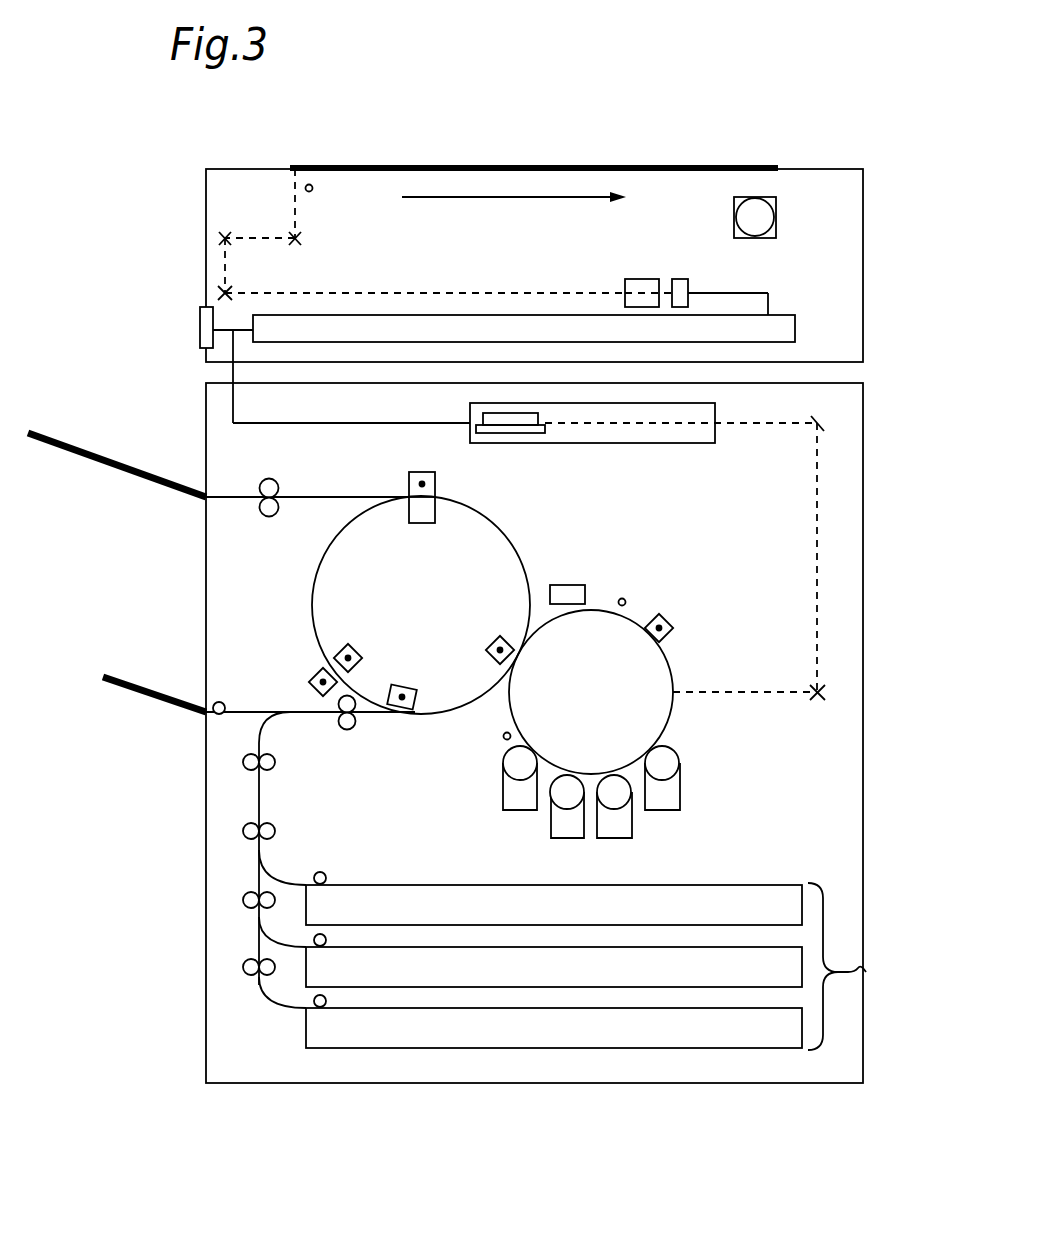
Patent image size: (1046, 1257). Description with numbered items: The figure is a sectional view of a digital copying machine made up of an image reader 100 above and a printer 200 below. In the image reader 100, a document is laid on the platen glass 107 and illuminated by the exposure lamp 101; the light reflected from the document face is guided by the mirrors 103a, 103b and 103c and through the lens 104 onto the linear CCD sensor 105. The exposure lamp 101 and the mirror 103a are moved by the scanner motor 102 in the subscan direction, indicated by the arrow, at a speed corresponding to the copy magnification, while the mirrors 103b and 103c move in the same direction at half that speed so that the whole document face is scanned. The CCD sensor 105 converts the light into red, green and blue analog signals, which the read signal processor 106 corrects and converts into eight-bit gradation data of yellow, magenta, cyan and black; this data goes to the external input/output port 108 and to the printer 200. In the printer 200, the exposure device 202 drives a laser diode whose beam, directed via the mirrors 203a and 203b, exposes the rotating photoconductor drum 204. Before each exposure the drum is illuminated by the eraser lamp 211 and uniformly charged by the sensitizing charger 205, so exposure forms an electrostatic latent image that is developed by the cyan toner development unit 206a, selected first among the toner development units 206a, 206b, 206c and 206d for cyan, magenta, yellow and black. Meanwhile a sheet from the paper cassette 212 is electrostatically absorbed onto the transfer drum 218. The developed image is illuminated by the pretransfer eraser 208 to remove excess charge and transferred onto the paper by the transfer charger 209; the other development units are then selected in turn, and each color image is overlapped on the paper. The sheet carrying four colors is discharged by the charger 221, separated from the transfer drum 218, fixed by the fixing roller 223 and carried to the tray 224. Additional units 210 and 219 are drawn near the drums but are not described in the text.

The image reader 100 is at (872, 236).
The exposure lamp 101 is at (312, 190).
The scanner motor 102 is at (776, 220).
The mirror 103a is at (300, 240).
The mirror 103b is at (228, 235).
The mirror 103c is at (222, 292).
The lens 104 is at (645, 279).
The CCD sensor 105 is at (680, 279).
The read signal processor 106 is at (795, 328).
The platen glass 107 is at (490, 166).
The external input/output port 108 is at (200, 335).
The printer 200 is at (872, 454).
The exposure device 202 is at (590, 443).
The mirror 203a is at (704, 539).
The mirror 203b is at (820, 698).
The photoconductor drum 204 is at (615, 709).
The sensitizing charger 205 is at (672, 620).
The toner development unit of cyan 206a is at (526, 811).
The toner development unit of magenta 206b is at (572, 839).
The toner development unit of yellow 206c is at (604, 839).
The toner development unit of black 206d is at (665, 811).
The pretransfer eraser 208 is at (505, 739).
The transfer charger 209 is at (494, 636).
The cleaning unit 210 is at (562, 584).
The eraser lamp 211 is at (626, 600).
The paper cassette 212 is at (866, 972).
The transfer drum 218 is at (455, 582).
The transfer/cleaning units 219 is at (404, 685).
The charger 221 is at (437, 484).
The fixing roller 223 is at (280, 488).
The tray 224 is at (113, 457).